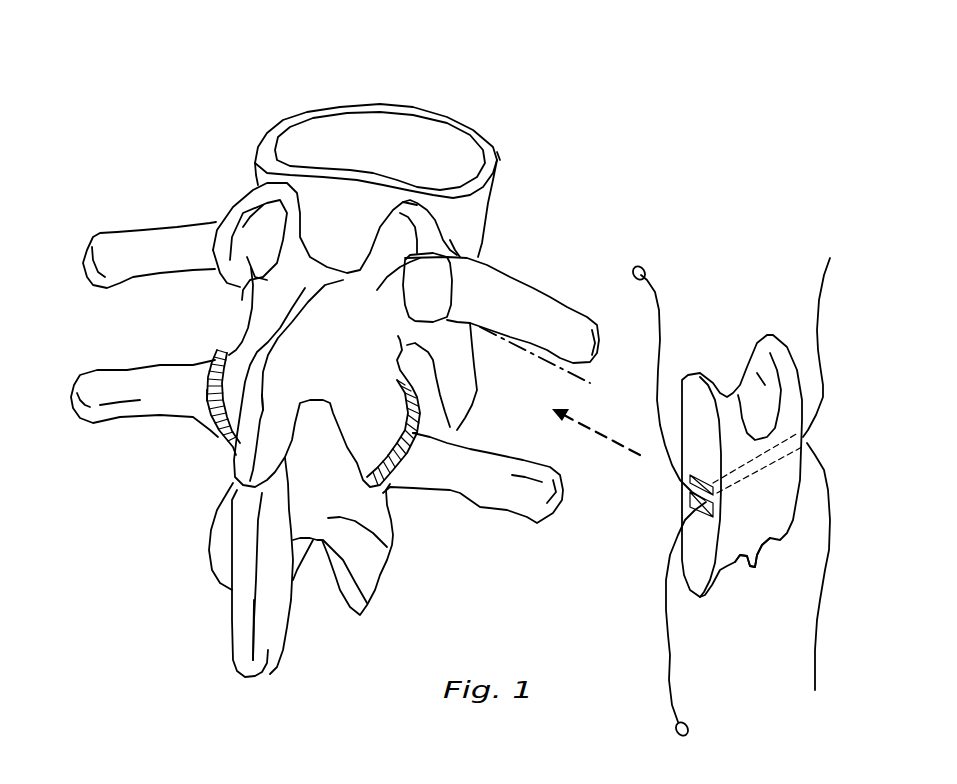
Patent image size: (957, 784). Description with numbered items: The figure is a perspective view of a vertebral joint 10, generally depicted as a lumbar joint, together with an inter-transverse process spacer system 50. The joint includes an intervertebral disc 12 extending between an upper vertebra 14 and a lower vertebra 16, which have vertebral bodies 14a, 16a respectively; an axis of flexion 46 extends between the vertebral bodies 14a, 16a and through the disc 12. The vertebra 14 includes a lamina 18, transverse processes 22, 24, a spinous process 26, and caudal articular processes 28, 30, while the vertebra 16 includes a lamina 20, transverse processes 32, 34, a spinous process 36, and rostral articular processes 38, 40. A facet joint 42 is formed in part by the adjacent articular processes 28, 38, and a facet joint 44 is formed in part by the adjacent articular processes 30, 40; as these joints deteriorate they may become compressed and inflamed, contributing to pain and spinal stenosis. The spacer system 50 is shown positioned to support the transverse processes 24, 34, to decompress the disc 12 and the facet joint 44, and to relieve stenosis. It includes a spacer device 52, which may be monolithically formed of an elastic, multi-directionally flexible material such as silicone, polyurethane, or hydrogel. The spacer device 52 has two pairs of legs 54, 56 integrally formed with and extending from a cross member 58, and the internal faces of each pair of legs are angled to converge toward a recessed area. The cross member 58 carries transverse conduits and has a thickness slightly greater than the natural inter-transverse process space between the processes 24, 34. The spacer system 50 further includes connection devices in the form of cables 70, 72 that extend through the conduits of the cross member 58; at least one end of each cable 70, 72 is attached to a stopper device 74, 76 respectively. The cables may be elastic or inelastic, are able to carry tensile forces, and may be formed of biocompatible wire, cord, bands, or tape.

The vertebral joint 10 is at (211, 127).
The intervertebral disc 12 is at (468, 325).
The vertebra 14 is at (325, 113).
The vertebral body 14a is at (500, 152).
The vertebra 16 is at (387, 571).
The vertebral body 16a is at (477, 395).
The lamina 18 is at (457, 257).
The lamina 20 is at (387, 547).
The transverse process 22 is at (112, 230).
The transverse process 24 is at (560, 298).
The spinous process 26 is at (253, 343).
The caudal articular process 28 is at (237, 360).
The caudal articular process 30 is at (382, 428).
The transverse process 32 is at (100, 423).
The transverse process 34 is at (537, 523).
The spinous process 36 is at (288, 650).
The rostral articular process 38 is at (220, 437).
The rostral articular process 40 is at (410, 487).
The facet joint 42 is at (207, 390).
The facet joint 44 is at (413, 433).
The axis of flexion 46 is at (240, 200).
The spacer system 50 is at (767, 311).
The spacer device 52 is at (682, 512).
The legs 54 is at (752, 573).
The legs 56 is at (757, 373).
The cross member 58 is at (778, 503).
The cable 70 is at (666, 645).
The cable 72 is at (827, 363).
The stopper device 74 is at (689, 733).
The stopper device 76 is at (645, 270).